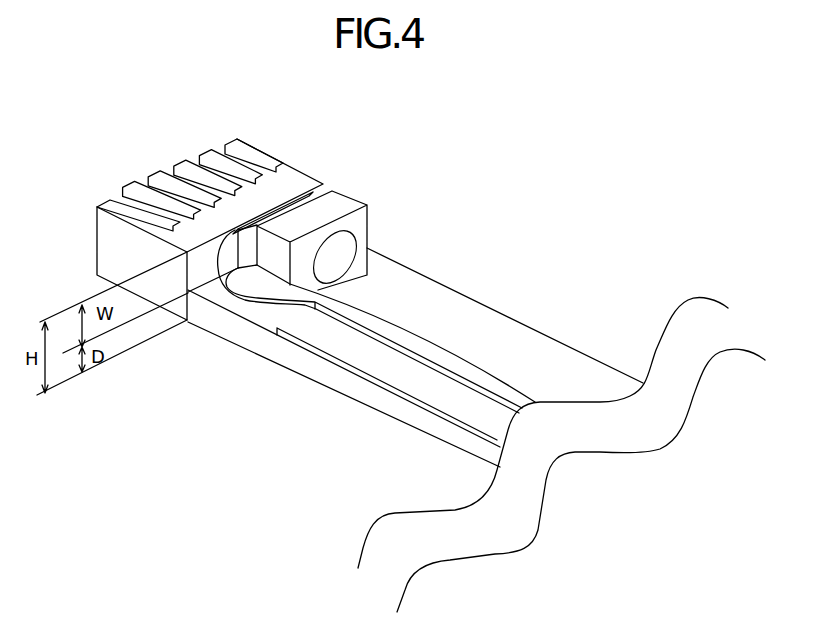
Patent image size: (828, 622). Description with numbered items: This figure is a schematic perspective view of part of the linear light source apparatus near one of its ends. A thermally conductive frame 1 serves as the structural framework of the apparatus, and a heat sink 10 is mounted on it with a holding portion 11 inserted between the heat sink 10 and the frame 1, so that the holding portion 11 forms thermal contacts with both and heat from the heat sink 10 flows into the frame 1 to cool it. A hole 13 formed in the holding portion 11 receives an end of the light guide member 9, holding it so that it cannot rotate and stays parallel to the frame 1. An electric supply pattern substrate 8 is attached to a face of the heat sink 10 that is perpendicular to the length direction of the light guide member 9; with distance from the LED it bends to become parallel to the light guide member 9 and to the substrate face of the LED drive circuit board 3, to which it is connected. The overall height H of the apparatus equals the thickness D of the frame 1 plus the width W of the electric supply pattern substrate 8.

The thermally conductive frame 1 is at (432, 437).
The LED drive circuit board 3 is at (395, 368).
The electric supply pattern substrate 8 is at (290, 308).
The light guide member 9 is at (470, 297).
The heat sink 10 is at (240, 134).
The holding portion 11 is at (342, 183).
The hole 13 is at (358, 232).